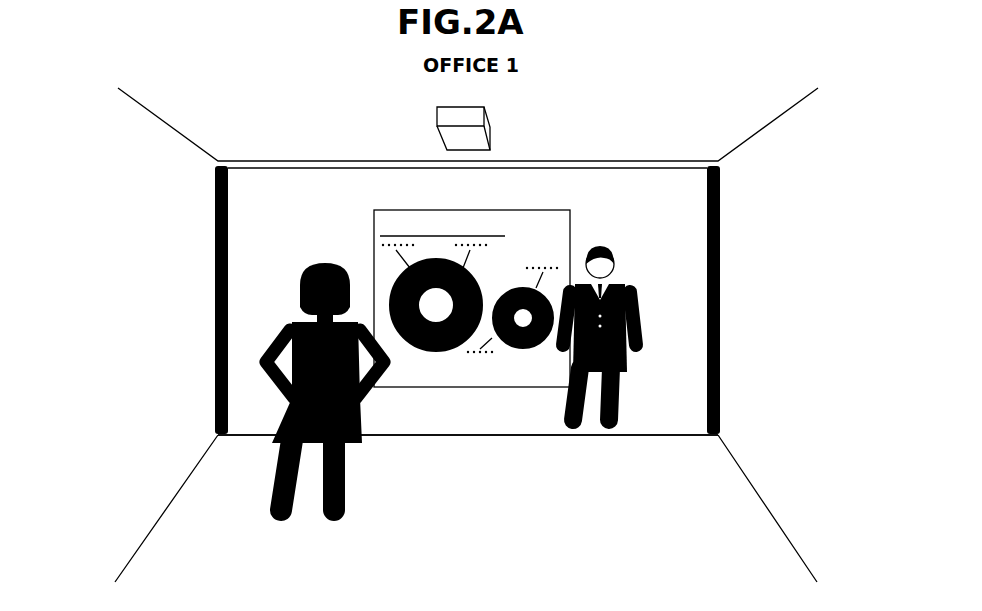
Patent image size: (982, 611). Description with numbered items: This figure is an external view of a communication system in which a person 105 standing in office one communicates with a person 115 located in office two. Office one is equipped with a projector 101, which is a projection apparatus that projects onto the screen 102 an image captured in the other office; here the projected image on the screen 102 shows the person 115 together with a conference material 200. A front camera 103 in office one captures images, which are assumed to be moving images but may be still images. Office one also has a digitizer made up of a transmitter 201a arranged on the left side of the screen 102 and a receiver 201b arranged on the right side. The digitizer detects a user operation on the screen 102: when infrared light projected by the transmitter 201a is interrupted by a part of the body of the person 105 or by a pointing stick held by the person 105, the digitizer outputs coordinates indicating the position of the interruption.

The projector 101 is at (492, 140).
The screen 102 is at (250, 426).
The front camera 103 is at (471, 302).
The person 105 is at (345, 473).
The person 115 is at (632, 296).
The conference material 200 is at (560, 215).
The transmitter 201a is at (214, 272).
The receiver 201b is at (720, 269).